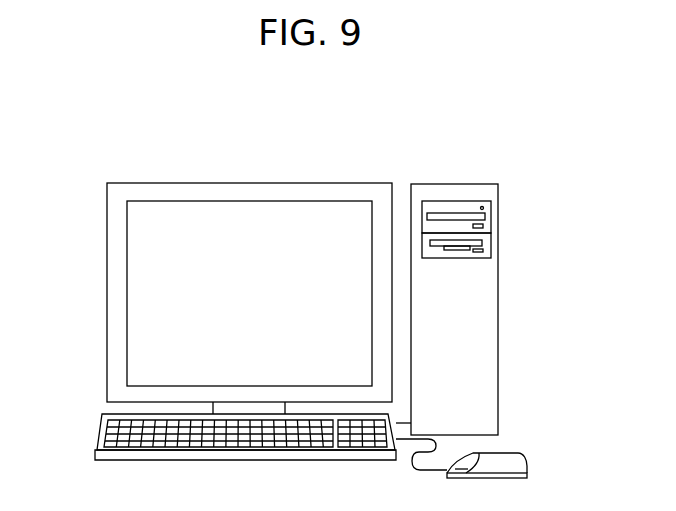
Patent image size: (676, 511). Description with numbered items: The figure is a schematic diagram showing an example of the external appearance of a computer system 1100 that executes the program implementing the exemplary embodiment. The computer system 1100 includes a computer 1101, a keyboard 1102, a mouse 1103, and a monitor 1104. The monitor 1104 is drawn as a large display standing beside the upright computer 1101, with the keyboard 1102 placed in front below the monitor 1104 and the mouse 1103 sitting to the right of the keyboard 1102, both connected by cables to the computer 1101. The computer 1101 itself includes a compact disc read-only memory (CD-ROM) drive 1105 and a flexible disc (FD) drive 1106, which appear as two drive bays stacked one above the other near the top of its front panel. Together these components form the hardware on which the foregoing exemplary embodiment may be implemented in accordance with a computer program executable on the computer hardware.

The computer system 1100 is at (388, 93).
The computer 1101 is at (455, 184).
The keyboard 1102 is at (97, 445).
The mouse 1103 is at (528, 462).
The monitor 1104 is at (343, 183).
The compact disc read-only memory (CD-ROM) drive 1105 is at (491, 213).
The flexible disc (FD) drive 1106 is at (491, 243).